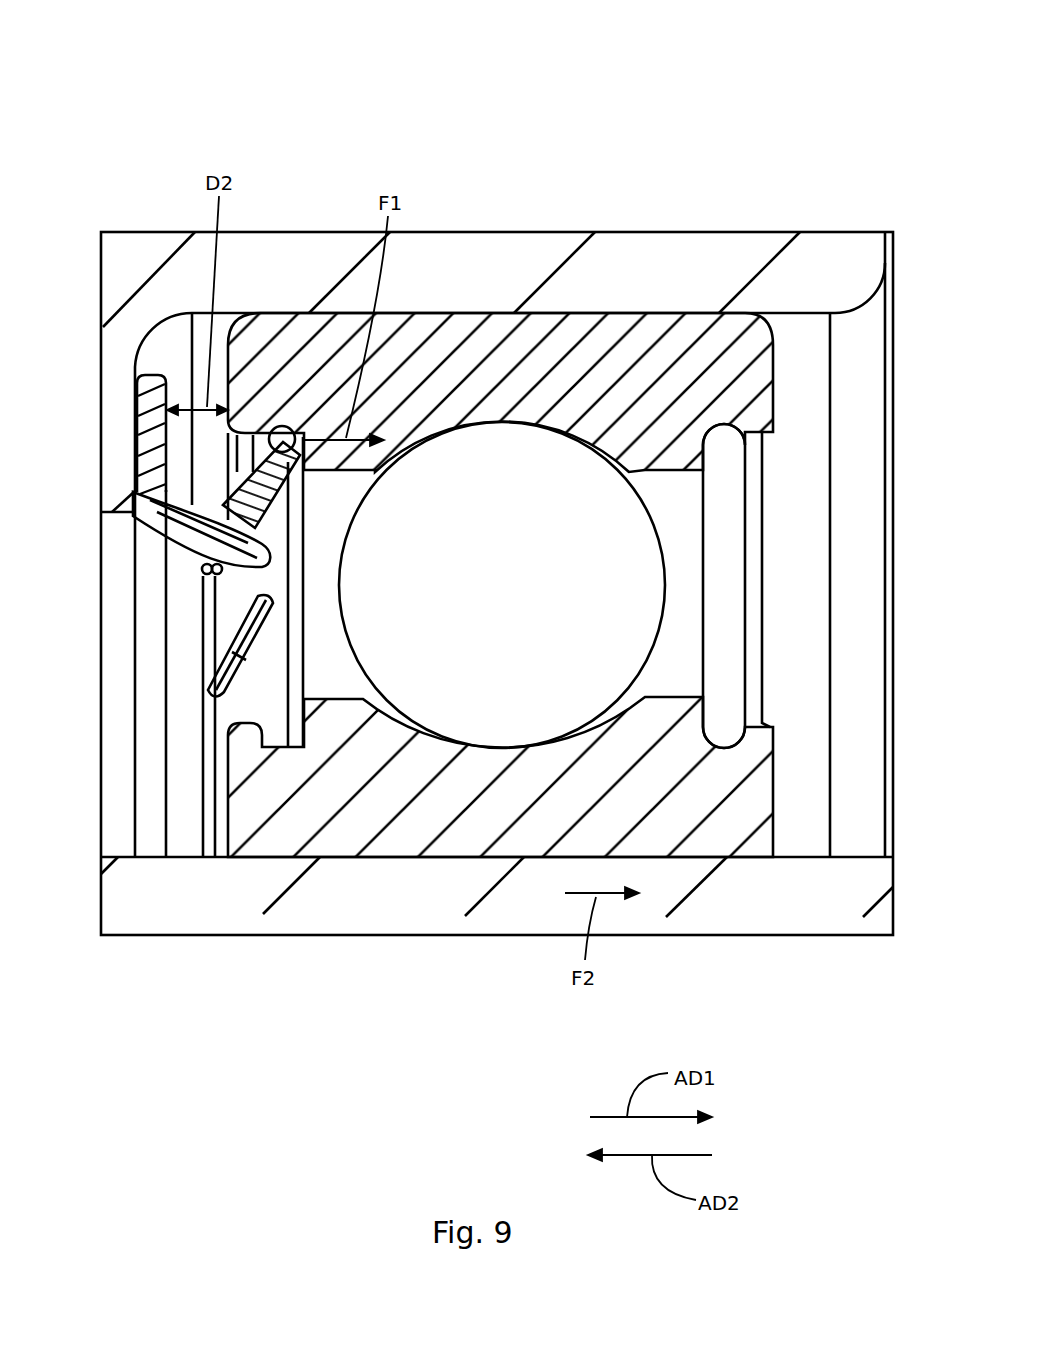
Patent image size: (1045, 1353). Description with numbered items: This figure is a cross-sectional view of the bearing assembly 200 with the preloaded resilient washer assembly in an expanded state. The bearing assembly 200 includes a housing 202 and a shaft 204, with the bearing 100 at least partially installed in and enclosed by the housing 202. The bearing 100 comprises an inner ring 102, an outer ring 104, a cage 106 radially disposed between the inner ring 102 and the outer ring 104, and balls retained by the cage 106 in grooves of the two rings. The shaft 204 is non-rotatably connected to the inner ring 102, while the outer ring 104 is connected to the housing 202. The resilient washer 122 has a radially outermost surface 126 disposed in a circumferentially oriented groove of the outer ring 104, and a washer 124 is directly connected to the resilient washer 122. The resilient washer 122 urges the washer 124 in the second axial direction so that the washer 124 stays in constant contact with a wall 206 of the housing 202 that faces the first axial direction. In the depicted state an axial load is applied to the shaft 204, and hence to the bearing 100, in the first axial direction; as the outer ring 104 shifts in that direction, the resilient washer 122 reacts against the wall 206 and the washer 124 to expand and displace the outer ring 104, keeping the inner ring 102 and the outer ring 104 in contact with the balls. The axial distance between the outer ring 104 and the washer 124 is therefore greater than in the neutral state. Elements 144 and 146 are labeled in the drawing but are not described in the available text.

The bearing assembly 200 is at (829, 62).
The housing 202 is at (893, 248).
The shaft 204 is at (763, 900).
The wall 206 is at (134, 372).
The bearing 100 is at (906, 345).
The inner ring 102 is at (773, 795).
The outer ring 104 is at (773, 410).
The cage 106 is at (661, 586).
The resilient washer 122 is at (226, 487).
The washer 124 is at (178, 551).
The radially outermost surface 126 is at (286, 427).
The spring element 144 is at (148, 437).
The spring seat 146 is at (140, 376).